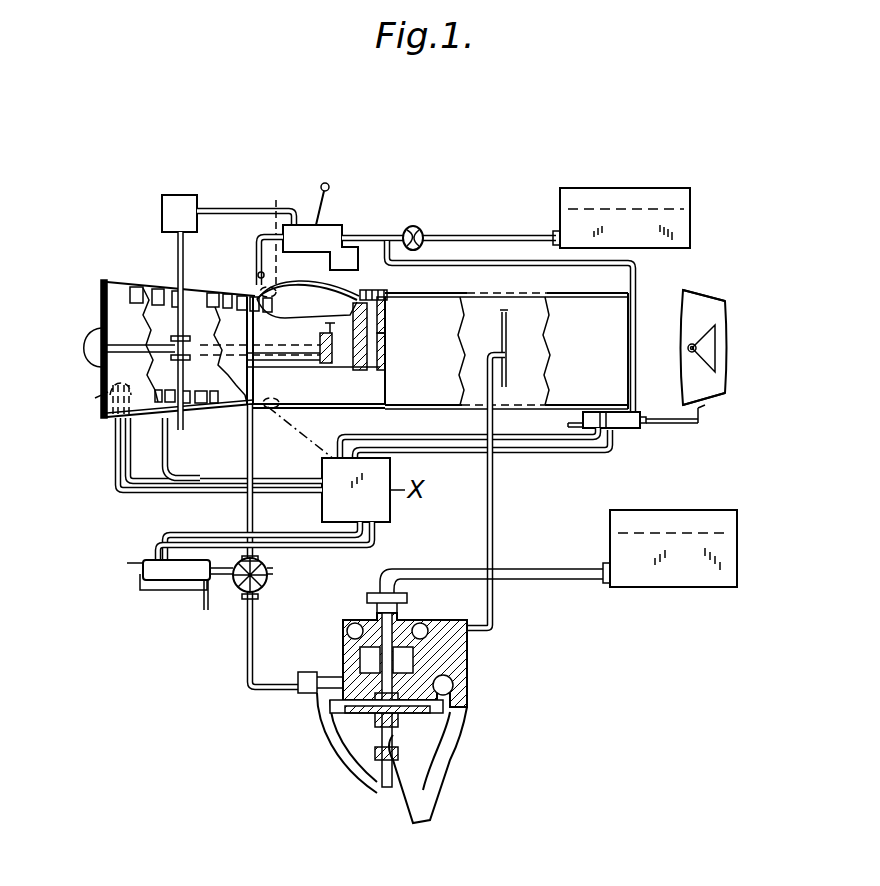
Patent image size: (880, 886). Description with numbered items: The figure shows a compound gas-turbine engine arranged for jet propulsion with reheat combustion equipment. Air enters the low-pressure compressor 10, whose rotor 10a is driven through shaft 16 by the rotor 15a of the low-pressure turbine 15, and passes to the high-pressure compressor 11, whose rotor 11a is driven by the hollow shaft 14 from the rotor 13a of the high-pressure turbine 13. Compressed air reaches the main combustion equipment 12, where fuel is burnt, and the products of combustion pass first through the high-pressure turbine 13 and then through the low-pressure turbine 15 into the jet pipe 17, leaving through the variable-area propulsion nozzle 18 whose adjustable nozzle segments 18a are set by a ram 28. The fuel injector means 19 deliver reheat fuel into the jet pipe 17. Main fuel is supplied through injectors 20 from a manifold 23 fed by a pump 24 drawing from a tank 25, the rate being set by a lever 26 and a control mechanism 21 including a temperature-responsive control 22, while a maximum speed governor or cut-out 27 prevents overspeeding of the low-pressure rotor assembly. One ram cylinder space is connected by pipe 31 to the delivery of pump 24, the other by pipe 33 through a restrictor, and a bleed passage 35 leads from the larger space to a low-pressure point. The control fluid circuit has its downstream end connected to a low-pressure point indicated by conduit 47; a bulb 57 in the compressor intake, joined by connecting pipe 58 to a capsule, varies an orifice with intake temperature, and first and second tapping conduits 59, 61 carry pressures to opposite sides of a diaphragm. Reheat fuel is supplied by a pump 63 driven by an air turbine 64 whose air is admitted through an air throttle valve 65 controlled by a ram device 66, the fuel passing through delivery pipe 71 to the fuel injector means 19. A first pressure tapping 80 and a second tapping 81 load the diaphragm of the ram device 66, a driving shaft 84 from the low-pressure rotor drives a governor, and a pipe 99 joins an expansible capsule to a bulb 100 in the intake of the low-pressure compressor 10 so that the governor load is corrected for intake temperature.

The low-pressure compressor 10 is at (130, 287).
The rotor of the low-pressure compressor 10a is at (157, 320).
The high-pressure compressor 11 is at (233, 300).
The rotor of the high-pressure compressor 11a is at (207, 313).
The main combustion equipment 12 is at (290, 302).
The high-pressure turbine 13 is at (350, 287).
The rotor of the high-pressure turbine 13a is at (387, 340).
The hollow shaft 14 is at (290, 362).
The low-pressure turbine 15 is at (368, 302).
The rotor of the low-pressure turbine 15a is at (388, 313).
The shaft 16 is at (330, 362).
The jet pipe 17 is at (491, 297).
The variable-area propulsion nozzle 18 is at (716, 317).
The adjustable nozzle segments 18a is at (703, 292).
The fuel injector means 19 is at (508, 386).
The injectors 20 is at (318, 420).
The control mechanism 21 is at (352, 258).
The temperature-responsive control 22 is at (368, 290).
The manifold 23 is at (262, 272).
The pump 24 is at (413, 228).
The tank 25 is at (618, 190).
The lever 26 is at (318, 235).
The maximum speed governor or cut-out 27 is at (176, 195).
The ram 28 is at (633, 428).
The pipe 31 is at (637, 265).
The pipe 33 is at (607, 430).
The bleed passage 35 is at (568, 423).
The conduit 47 is at (165, 483).
The bulb 57 is at (95, 398).
The connecting pipe 58 is at (116, 490).
The first tapping conduit 59 is at (412, 437).
The second tapping conduit 61 is at (545, 452).
The pump 63 is at (470, 648).
The air turbine 64 is at (362, 715).
The air throttle valve 65 is at (263, 590).
The ram device 66 is at (157, 572).
The delivery pipe 71 is at (494, 516).
The first pressure tapping 80 is at (278, 533).
The second tapping 81 is at (302, 548).
The driving shaft 84 is at (184, 430).
The pipe 99 is at (176, 470).
The bulb 100 is at (106, 382).